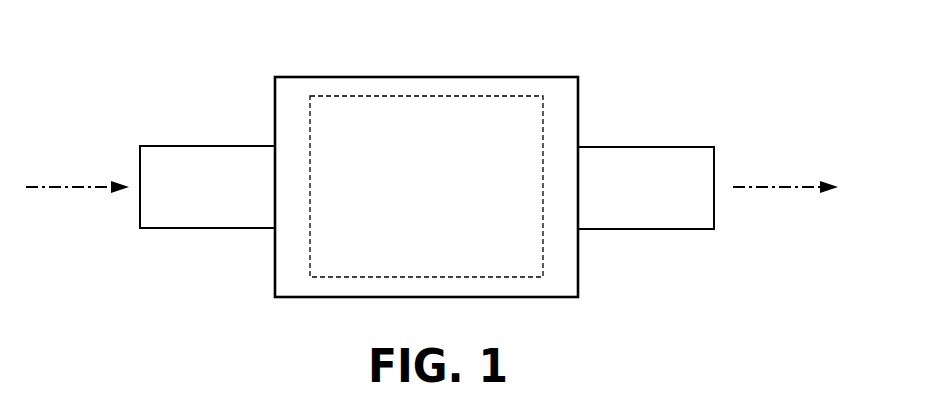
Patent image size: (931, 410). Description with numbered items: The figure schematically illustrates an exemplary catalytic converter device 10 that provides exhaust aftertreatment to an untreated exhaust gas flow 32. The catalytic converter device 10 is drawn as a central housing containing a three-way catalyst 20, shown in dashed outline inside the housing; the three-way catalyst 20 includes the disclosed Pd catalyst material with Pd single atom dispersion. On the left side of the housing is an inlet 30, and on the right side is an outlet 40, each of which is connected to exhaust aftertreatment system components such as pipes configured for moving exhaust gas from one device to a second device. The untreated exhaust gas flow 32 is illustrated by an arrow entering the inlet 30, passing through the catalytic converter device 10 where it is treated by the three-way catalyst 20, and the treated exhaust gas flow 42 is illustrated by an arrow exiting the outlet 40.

The catalytic converter device 10 is at (414, 77).
The three-way catalyst 20 is at (453, 96).
The inlet 30 is at (212, 146).
The outlet 40 is at (626, 147).
The untreated exhaust gas flow 32 is at (80, 187).
The treated exhaust gas flow 42 is at (783, 187).